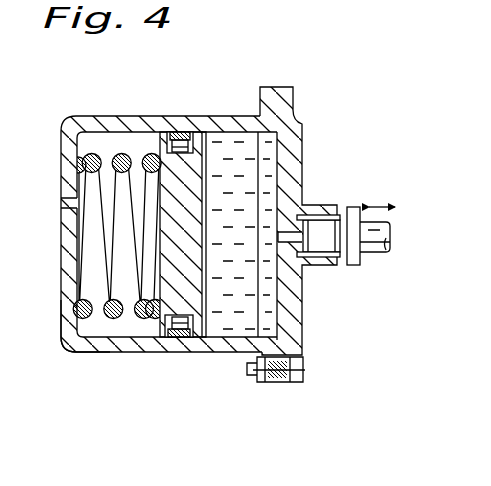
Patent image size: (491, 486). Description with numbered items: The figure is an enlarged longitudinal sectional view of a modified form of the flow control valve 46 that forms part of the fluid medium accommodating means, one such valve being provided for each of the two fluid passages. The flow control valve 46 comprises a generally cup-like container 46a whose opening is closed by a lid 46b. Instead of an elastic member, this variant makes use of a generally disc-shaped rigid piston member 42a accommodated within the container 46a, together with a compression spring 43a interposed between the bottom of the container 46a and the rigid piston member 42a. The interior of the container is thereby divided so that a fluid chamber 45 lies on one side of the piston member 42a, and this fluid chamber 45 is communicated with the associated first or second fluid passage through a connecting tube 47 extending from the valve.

The rigid piston member 42a is at (188, 173).
The compression spring 43a is at (113, 319).
The fluid chamber 45 is at (223, 313).
The flow control valve 46 is at (159, 354).
The container 46a is at (73, 346).
The lid 46b is at (293, 156).
The connecting tube 47 is at (370, 244).